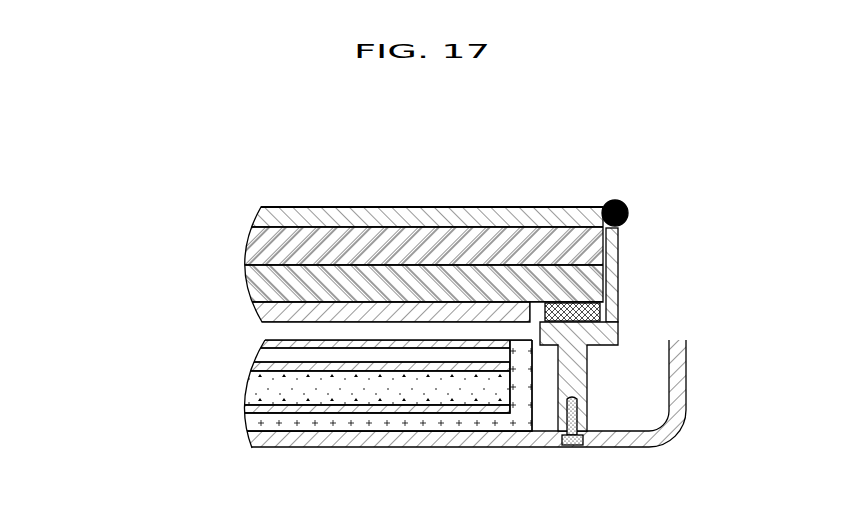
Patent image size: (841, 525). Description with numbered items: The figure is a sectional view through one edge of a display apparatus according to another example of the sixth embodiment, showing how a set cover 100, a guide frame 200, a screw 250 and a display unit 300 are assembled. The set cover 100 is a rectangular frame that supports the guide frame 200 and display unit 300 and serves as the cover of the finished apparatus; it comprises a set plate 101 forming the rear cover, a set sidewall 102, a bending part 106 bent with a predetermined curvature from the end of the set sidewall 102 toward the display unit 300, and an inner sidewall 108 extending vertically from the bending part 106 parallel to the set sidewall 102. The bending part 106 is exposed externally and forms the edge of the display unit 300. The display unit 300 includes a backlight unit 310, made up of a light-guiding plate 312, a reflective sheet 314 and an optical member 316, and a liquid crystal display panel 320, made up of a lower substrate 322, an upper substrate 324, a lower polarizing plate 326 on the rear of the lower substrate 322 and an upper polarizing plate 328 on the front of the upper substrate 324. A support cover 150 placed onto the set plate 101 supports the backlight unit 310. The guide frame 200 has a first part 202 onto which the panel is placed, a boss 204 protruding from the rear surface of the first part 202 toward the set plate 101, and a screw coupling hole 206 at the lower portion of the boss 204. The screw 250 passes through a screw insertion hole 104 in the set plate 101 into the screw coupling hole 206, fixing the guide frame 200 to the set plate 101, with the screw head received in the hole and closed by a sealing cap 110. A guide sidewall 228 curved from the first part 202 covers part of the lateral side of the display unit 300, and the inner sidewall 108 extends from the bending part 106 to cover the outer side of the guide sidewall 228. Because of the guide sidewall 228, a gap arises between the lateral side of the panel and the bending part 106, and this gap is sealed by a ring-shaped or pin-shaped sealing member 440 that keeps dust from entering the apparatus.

The set cover 100 is at (474, 338).
The set plate 101 is at (255, 443).
The set sidewall 102 is at (678, 255).
The screw insertion hole 104 is at (587, 444).
The bending part 106 is at (656, 210).
The inner sidewall 108 is at (633, 238).
The sealing cap 110 is at (565, 446).
The support cover 150 is at (252, 423).
The guide frame 200 is at (664, 336).
The first part 202 is at (592, 338).
The boss 204 is at (573, 368).
The screw coupling hole 206 is at (575, 398).
The guide sidewall 228 is at (615, 303).
The screw 250 is at (577, 420).
The display unit 300 is at (313, 308).
The backlight unit 310 is at (307, 381).
The light-guiding plate 312 is at (252, 391).
The reflective sheet 314 is at (250, 408).
The optical member 316 is at (262, 366).
The liquid crystal display panel 320 is at (347, 258).
The lower substrate 322 is at (246, 285).
The upper substrate 324 is at (246, 249).
The lower polarizing plate 326 is at (258, 318).
The upper polarizing plate 328 is at (260, 213).
The sealing member 440 is at (615, 199).